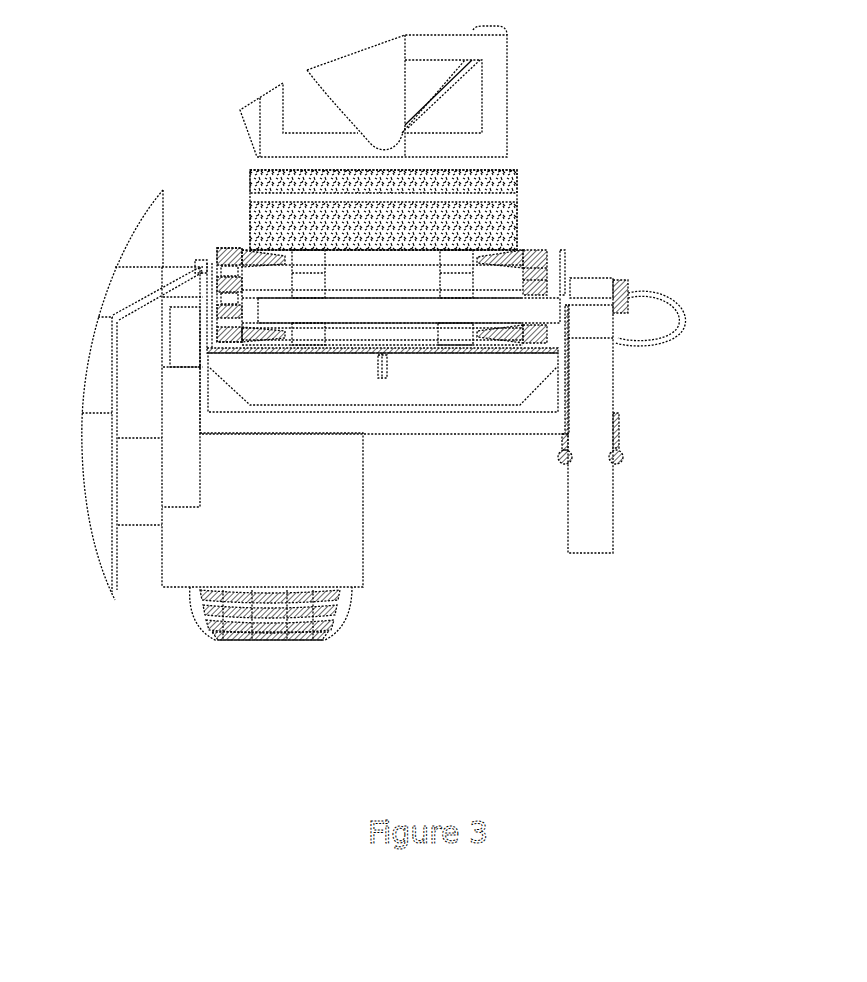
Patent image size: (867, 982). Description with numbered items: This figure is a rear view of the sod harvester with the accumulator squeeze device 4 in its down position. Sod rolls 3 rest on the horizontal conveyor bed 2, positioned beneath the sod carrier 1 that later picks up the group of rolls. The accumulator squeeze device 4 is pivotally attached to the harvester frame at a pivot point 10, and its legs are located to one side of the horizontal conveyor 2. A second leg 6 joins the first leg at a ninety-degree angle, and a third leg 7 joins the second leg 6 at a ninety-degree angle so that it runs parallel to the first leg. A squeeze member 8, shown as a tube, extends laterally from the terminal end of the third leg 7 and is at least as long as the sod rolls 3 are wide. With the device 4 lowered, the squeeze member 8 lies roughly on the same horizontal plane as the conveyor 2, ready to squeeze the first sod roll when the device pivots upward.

The sod carrier 1 is at (492, 108).
The horizontal conveyor bed 2 is at (547, 253).
The sod rolls 3 is at (517, 177).
The sod roll accumulator squeeze device 4 is at (752, 482).
The second leg 6 is at (585, 500).
The third leg 7 is at (593, 323).
The squeeze member 8 is at (522, 316).
The pivot point 10 is at (620, 455).